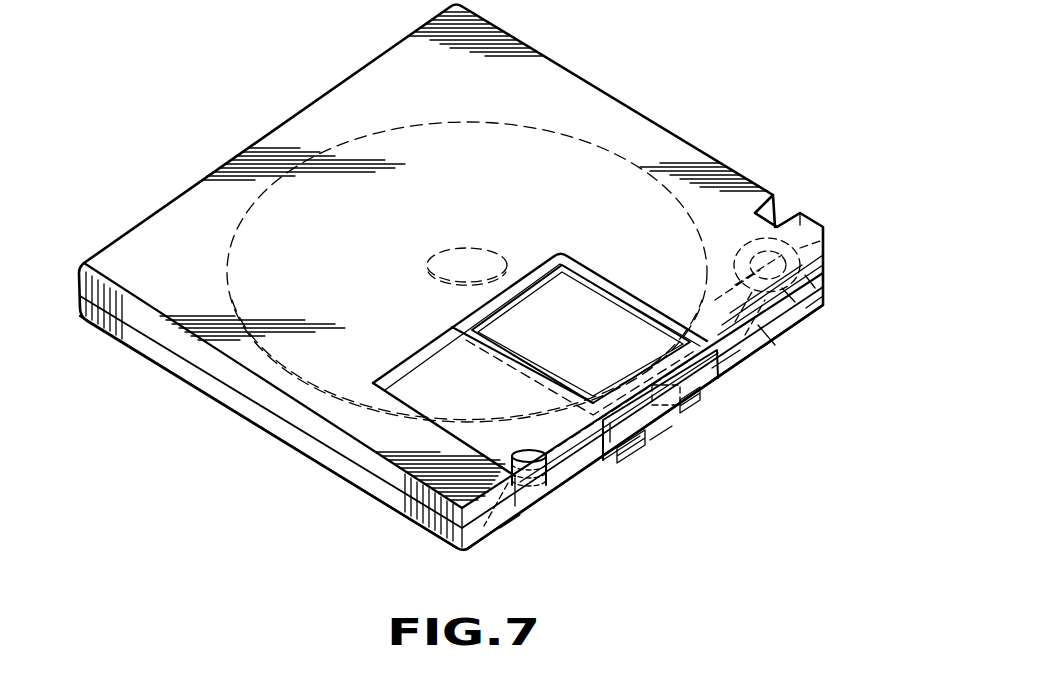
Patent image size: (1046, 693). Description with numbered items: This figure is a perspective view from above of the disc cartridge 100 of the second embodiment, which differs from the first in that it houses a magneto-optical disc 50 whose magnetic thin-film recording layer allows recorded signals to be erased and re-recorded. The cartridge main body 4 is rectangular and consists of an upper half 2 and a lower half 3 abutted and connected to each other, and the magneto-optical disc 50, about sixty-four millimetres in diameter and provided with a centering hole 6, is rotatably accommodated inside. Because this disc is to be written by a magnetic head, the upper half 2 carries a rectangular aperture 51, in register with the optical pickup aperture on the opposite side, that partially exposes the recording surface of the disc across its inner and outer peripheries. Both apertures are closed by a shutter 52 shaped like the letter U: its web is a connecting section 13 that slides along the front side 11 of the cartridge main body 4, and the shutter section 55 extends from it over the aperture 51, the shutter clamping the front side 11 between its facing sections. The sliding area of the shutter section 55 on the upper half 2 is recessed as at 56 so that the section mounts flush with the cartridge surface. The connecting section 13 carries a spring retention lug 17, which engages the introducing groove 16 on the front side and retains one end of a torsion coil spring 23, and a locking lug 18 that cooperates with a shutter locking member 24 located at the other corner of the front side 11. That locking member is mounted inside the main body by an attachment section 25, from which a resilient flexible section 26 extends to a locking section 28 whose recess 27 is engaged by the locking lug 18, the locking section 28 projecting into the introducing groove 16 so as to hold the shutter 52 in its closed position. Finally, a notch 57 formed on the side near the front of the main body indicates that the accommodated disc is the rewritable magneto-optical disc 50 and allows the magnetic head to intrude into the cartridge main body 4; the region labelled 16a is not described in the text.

The disc cartridge 100 is at (272, 128).
The upper half 2 is at (186, 349).
The lower half 3 is at (198, 377).
The cartridge main body 4 is at (133, 388).
The magneto-optical disc 50 is at (293, 378).
The centering hole 6 is at (463, 247).
The shutter section 55 is at (543, 262).
The aperture 51 is at (585, 285).
The recess 56 is at (413, 360).
The shutter 52 is at (670, 420).
The recess 27 is at (690, 405).
The locking lug 18 is at (728, 388).
The locking section 28 is at (733, 380).
The flexible section 26 is at (771, 350).
The introducing groove 16 is at (790, 337).
The slide member top portion 16a is at (800, 296).
The attachment section 25 is at (805, 245).
The shutter locking member 24 is at (824, 298).
The notch 57 is at (778, 207).
The torsion coil spring 23 is at (540, 486).
The front side 11 is at (500, 523).
The spring retention lug 17 is at (623, 462).
The connecting section 13 is at (667, 455).